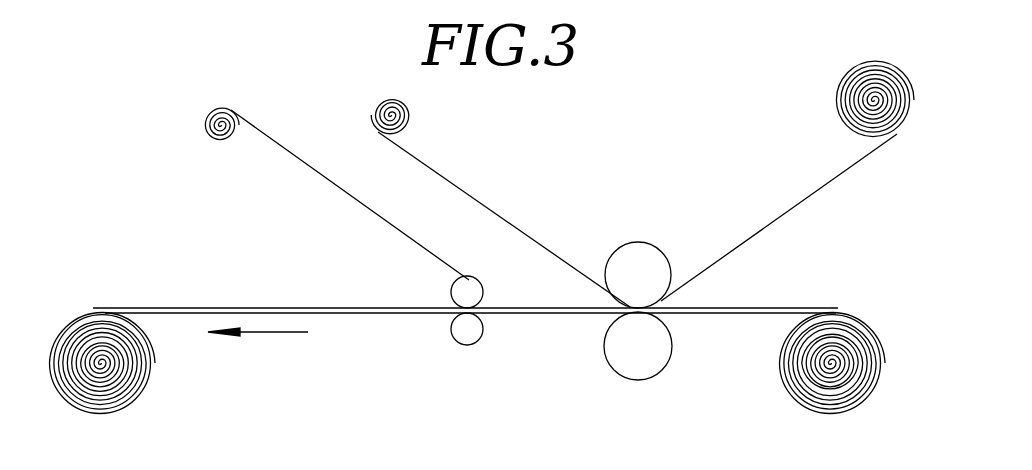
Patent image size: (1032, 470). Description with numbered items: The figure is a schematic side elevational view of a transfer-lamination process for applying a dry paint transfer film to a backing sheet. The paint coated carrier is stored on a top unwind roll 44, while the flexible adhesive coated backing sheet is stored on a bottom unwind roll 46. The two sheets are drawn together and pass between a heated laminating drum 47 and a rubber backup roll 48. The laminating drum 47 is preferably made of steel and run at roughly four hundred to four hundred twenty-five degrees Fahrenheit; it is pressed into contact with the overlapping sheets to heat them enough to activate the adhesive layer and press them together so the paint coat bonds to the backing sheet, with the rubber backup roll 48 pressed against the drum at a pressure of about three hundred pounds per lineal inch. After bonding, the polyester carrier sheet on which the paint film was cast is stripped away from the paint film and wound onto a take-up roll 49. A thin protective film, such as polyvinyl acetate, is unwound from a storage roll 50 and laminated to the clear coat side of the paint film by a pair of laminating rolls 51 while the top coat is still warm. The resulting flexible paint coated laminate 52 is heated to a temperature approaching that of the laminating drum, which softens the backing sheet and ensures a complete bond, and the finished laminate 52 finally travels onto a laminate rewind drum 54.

The top unwind roll 44 is at (853, 100).
The bottom unwind roll 46 is at (867, 343).
The heated laminating drum 47 is at (658, 253).
The rubber backup roll 48 is at (655, 365).
The take-up roll 49 is at (400, 110).
The storage roll 50 is at (205, 125).
The laminating rolls 51 is at (470, 298).
The laminate 52 is at (575, 315).
The laminate rewind drum 54 is at (135, 380).